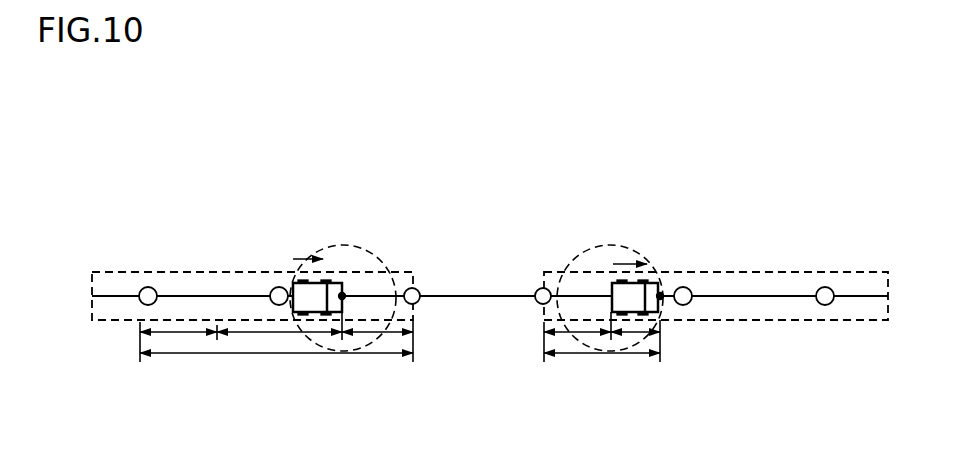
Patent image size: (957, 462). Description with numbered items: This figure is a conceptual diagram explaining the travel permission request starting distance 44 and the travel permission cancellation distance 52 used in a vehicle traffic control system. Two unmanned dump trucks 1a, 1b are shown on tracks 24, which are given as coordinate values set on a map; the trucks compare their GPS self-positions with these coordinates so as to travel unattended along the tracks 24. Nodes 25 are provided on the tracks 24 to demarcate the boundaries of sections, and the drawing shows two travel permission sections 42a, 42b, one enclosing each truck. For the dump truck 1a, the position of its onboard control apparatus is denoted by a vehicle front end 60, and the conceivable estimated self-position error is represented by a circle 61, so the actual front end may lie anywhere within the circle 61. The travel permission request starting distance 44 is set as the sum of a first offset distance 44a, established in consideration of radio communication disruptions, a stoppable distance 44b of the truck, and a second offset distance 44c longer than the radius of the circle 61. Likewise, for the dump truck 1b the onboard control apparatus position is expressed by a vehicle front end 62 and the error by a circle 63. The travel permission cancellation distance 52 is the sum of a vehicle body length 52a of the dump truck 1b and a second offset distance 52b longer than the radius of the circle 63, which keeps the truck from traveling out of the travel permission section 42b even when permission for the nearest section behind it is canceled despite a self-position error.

The dump truck 1a is at (330, 283).
The dump truck 1b is at (648, 283).
The track 24 is at (760, 294).
The node 25 is at (825, 287).
The travel permission section 42a is at (152, 270).
The travel permission section 42b is at (742, 321).
The travel permission request starting distance 44 is at (310, 356).
The first offset distance 44a is at (175, 335).
The stoppable distance 44b is at (250, 335).
The second offset distance 44c is at (377, 335).
The travel permission cancellation distance 52 is at (600, 356).
The vehicle body length 52a is at (640, 335).
The second offset distance 52b is at (570, 335).
The vehicle front end 60 is at (346, 292).
The circle 61 is at (385, 264).
The vehicle front end 62 is at (663, 292).
The circle 63 is at (617, 245).